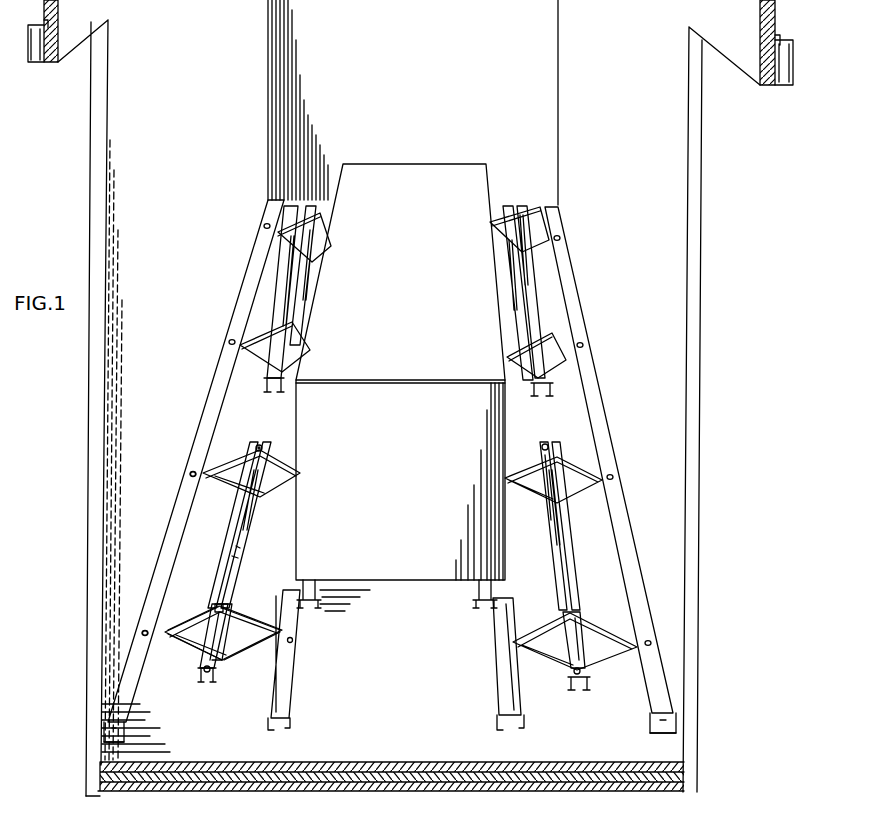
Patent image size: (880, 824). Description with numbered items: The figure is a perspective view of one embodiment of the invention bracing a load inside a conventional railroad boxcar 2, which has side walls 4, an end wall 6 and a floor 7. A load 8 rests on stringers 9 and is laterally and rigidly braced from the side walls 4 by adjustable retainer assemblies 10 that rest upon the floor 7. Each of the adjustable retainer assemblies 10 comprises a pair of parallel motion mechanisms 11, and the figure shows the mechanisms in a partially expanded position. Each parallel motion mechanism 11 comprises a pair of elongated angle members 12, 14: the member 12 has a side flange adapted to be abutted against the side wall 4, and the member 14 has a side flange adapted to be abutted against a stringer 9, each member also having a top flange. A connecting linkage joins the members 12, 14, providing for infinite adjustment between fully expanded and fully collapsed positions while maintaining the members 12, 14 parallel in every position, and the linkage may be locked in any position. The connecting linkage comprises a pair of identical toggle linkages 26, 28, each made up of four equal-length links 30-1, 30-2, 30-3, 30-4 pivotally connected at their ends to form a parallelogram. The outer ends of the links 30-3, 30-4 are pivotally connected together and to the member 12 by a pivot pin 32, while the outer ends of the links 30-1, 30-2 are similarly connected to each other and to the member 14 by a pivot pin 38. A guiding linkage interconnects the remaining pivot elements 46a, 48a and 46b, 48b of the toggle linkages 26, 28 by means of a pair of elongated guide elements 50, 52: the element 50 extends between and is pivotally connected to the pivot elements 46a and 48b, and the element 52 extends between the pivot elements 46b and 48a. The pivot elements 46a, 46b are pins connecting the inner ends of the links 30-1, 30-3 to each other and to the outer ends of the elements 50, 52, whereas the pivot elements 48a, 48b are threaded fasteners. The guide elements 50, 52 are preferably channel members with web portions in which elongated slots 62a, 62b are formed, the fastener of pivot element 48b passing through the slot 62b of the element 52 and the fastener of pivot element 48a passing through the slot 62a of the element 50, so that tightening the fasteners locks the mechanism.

The railroad boxcar 2 is at (771, 119).
The side walls 4 is at (184, 131).
The end wall 6 is at (434, 48).
The floor 7 is at (400, 684).
The load 8 is at (400, 473).
The stringers 9 is at (318, 593).
The adjustable retainer assemblies 10 is at (253, 410).
The parallel motion mechanism 11 is at (270, 300).
The elongated angle member 12 is at (122, 730).
The elongated angle member 14 is at (278, 720).
The toggle linkage 26 is at (223, 633).
The toggle linkage 28 is at (251, 473).
The link 30-1 is at (246, 655).
The link 30-2 is at (250, 622).
The link 30-3 is at (176, 655).
The link 30-4 is at (180, 612).
The pivot pin 32 is at (190, 474).
The pivot pin 38 is at (292, 640).
The pivot element 46a is at (206, 672).
The pivot element 46b is at (259, 446).
The pivot element 48a is at (222, 583).
The pivot element 48b is at (250, 498).
The guide element 50 is at (230, 656).
The guide element 52 is at (237, 558).
The elongated slot 62a is at (218, 628).
The elongated slot 62b is at (245, 518).